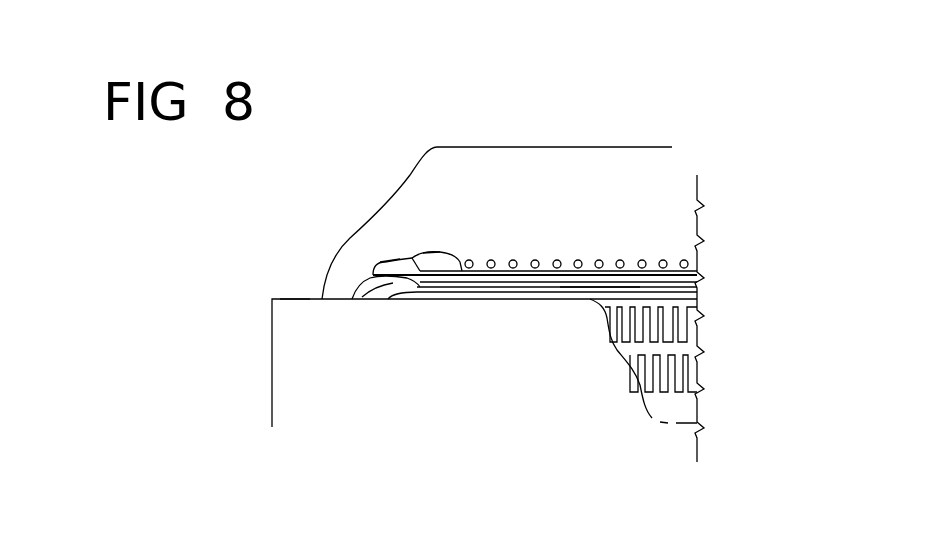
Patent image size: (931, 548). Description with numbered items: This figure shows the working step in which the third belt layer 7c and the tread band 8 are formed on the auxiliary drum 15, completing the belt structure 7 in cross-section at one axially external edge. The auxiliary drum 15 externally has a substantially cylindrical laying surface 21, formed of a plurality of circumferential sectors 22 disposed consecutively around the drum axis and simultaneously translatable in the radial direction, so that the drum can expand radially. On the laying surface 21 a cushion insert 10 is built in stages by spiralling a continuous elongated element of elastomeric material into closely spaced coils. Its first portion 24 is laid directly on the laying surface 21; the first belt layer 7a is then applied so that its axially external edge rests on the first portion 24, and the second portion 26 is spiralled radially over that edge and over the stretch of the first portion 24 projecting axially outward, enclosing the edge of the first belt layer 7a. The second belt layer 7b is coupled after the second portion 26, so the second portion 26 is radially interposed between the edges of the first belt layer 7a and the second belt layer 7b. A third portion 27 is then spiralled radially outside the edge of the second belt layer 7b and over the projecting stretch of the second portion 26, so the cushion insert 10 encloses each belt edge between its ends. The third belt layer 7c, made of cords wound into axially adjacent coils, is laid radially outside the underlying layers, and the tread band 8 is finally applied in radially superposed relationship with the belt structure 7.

The belt structure 7 is at (712, 283).
The first belt layer 7a is at (597, 285).
The second belt layer 7b is at (643, 275).
The third belt layer 7c is at (557, 260).
The tread band 8 is at (650, 163).
The cushion insert 10 is at (386, 258).
The auxiliary drum 15 is at (259, 322).
The laying surface 21 is at (293, 299).
The circumferential sectors 22 is at (667, 301).
The first portion 24 is at (372, 282).
The second portion 26 is at (403, 262).
The third portion 27 is at (434, 258).